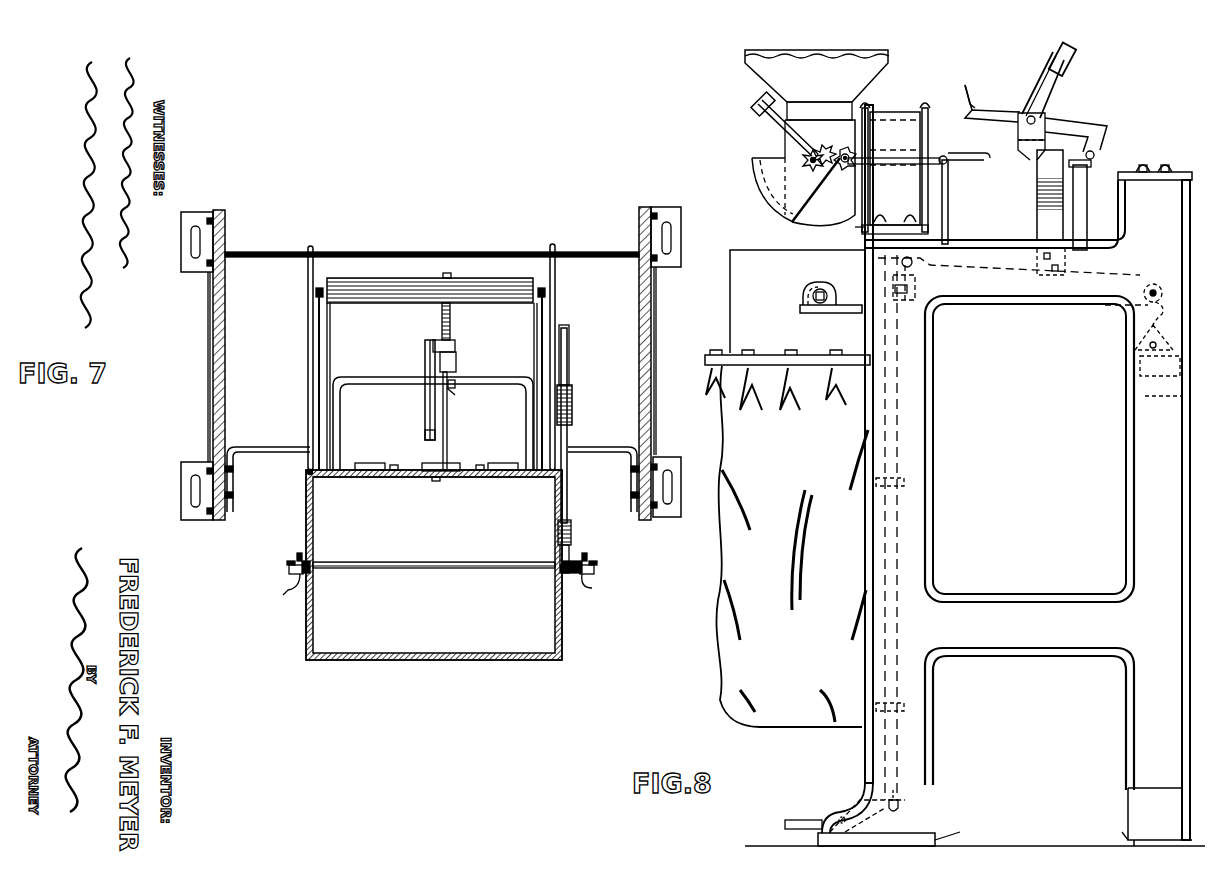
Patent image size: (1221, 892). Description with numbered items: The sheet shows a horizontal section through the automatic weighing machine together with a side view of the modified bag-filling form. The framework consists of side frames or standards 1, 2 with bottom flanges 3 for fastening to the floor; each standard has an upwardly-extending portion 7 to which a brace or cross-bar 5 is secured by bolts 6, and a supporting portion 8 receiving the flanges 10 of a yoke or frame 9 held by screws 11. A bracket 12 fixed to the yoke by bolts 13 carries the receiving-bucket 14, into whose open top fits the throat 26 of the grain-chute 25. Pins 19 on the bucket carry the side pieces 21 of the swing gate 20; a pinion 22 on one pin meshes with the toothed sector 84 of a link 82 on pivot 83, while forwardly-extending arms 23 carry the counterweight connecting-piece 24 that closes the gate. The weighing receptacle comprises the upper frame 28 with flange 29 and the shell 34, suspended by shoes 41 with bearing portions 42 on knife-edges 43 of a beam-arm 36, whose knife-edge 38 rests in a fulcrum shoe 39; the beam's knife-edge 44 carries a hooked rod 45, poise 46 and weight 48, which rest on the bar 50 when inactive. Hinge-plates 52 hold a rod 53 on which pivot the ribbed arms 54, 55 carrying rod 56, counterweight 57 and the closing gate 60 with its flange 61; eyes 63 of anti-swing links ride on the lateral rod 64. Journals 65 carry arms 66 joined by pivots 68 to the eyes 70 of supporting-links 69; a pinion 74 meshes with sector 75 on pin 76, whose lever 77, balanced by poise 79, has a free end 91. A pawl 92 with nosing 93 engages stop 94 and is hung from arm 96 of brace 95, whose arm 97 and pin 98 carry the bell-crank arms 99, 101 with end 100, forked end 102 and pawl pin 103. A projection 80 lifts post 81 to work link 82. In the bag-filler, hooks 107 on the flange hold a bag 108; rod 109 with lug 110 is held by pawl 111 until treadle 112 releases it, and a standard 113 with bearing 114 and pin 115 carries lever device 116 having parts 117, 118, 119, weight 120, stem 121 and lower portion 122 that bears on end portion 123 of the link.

In FIG. 7, the side frame or standard 1 is at (658, 363).
In FIG. 8, the side frame or standard 1 is at (935, 460).
In FIG. 7, the side frame or standard 2 is at (208, 310).
In FIG. 7, the laterally-extending flange 3 is at (181, 243).
In FIG. 8, the laterally-extending flange 3 is at (1031, 829).
In FIG. 8, the brace or cross-bar 5 is at (1118, 176).
In FIG. 8, the bolts or screws 6 is at (1162, 160).
In FIG. 8, the upwardly-extending portion 7 is at (1028, 510).
In FIG. 8, the supporting portion 8 is at (895, 236).
In FIG. 8, the yoke or frame 9 is at (895, 168).
In FIG. 8, the flanges 10 is at (858, 229).
In FIG. 8, the screws or bolts 11 is at (895, 208).
In FIG. 8, the bracket 12 is at (867, 106).
In FIG. 8, the bolts or screws 13 is at (921, 106).
In FIG. 8, the receiving-bucket 14 is at (815, 216).
In FIG. 8, the pins or pivots 19 is at (811, 164).
In FIG. 8, the swing gate or valve 20 is at (753, 178).
In FIG. 8, the side pieces 21 is at (776, 185).
In FIG. 8, the pinion 22 is at (824, 145).
In FIG. 8, the forwardly-extending arms 23 is at (782, 124).
In FIG. 8, the connecting-piece 24 is at (758, 102).
In FIG. 8, the grain-chute 25 is at (817, 76).
In FIG. 8, the throat 26 is at (819, 111).
In FIG. 8, the upper casing or frame 28 is at (730, 285).
In FIG. 8, the flange 29 is at (767, 355).
In FIG. 7, the shell 34 is at (405, 478).
In FIG. 8, the beam-arm 36 is at (848, 276).
In FIG. 8, the knife-edge 38 is at (903, 266).
In FIG. 8, the fulcrum or shoe 39 is at (908, 290).
In FIG. 8, the fulcrums or shoes 41 is at (812, 283).
In FIG. 8, the bearing or receiving portion 42 is at (820, 313).
In FIG. 8, the knife-edge 43 is at (813, 295).
In FIG. 8, the knife-edge 44 is at (1148, 300).
In FIG. 8, the link or hooked rod 45 is at (1152, 322).
In FIG. 8, the poise or weight 46 is at (1142, 372).
In FIG. 8, the weight 48 is at (1148, 350).
In FIG. 8, the bar or brace 50 is at (1145, 398).
In FIG. 7, the hinge-plates 52 is at (365, 463).
In FIG. 7, the rod 53 is at (306, 472).
In FIG. 7, the rearwardly-extending arms 54 is at (318, 322).
In FIG. 7, the rib 55 is at (331, 338).
In FIG. 7, the rod 56 is at (315, 292).
In FIG. 7, the counter weight or balance 57 is at (397, 283).
In FIG. 7, the closing gate or door 60 is at (434, 565).
In FIG. 7, the surrounding flange 61 is at (306, 522).
In FIG. 7, the eye 63 is at (314, 273).
In FIG. 7, the rod 64 is at (393, 252).
In FIG. 7, the pins or journals 65 is at (418, 569).
In FIG. 7, the arm or link 66 is at (285, 594).
In FIG. 7, the pivot 68 is at (288, 561).
In FIG. 7, the supporting-link 69 is at (298, 553).
In FIG. 7, the eye 70 is at (289, 569).
In FIG. 7, the toothed pinion 74 is at (566, 575).
In FIG. 7, the toothed sector 75 is at (570, 546).
In FIG. 7, the pivot or journal pin 76 is at (572, 530).
In FIG. 7, the arm or lever 77 is at (568, 365).
In FIG. 7, the poise or counterweight 79 is at (573, 395).
In FIG. 8, the projection 80 is at (1013, 276).
In FIG. 8, the post 81 is at (949, 199).
In FIG. 8, the link 82 is at (938, 156).
In FIG. 8, the pivot or pin 83 is at (840, 180).
In FIG. 8, the toothed sector 84 is at (845, 148).
In FIG. 7, the free end 91 is at (569, 330).
In FIG. 7, the pivotal pawl or dog 92 is at (448, 421).
In FIG. 7, the nosing 93 is at (432, 463).
In FIG. 7, the stop 94 is at (445, 481).
In FIG. 7, the brace or piece 95 is at (340, 408).
In FIG. 7, the arm 96 is at (425, 431).
In FIG. 7, the arm 97 is at (424, 342).
In FIG. 7, the pivot or pin 98 is at (456, 347).
In FIG. 7, the arm 99 is at (451, 320).
In FIG. 7, the horizontally-projecting end 100 is at (449, 274).
In FIG. 7, the arm 101 is at (457, 363).
In FIG. 7, the bifurcated end 102 is at (455, 397).
In FIG. 7, the pin 103 is at (456, 386).
In FIG. 8, the hooks or suspension devices 107 is at (835, 395).
In FIG. 8, the bag 108 is at (792, 546).
In FIG. 8, the downwardly-extending rod 109 is at (897, 420).
In FIG. 8, the holding-lug 110 is at (900, 803).
In FIG. 8, the pivoted lug or pawl 111 is at (880, 816).
In FIG. 8, the releasing treadle or lever 112 is at (798, 820).
In FIG. 8, the standard 113 is at (1037, 210).
In FIG. 8, the bearing portion 114 is at (1018, 140).
In FIG. 8, the pin 115 is at (1029, 115).
In FIG. 8, the lever device 116 is at (1054, 85).
In FIG. 8, the part 117 is at (1104, 142).
In FIG. 8, the part 118 is at (976, 104).
In FIG. 8, the part 119 is at (1050, 74).
In FIG. 8, the counterweight or balance 120 is at (1074, 62).
In FIG. 8, the stem 121 is at (1088, 203).
In FIG. 8, the lower portion 122 is at (968, 120).
In FIG. 8, the end portion 123 is at (986, 160).